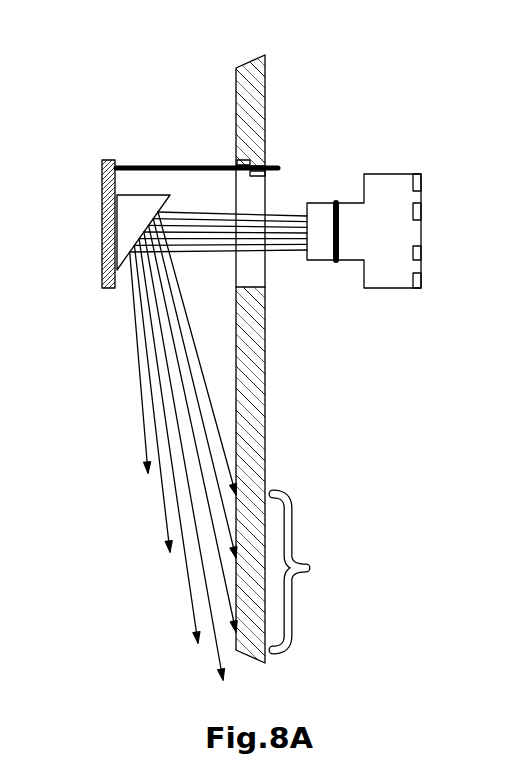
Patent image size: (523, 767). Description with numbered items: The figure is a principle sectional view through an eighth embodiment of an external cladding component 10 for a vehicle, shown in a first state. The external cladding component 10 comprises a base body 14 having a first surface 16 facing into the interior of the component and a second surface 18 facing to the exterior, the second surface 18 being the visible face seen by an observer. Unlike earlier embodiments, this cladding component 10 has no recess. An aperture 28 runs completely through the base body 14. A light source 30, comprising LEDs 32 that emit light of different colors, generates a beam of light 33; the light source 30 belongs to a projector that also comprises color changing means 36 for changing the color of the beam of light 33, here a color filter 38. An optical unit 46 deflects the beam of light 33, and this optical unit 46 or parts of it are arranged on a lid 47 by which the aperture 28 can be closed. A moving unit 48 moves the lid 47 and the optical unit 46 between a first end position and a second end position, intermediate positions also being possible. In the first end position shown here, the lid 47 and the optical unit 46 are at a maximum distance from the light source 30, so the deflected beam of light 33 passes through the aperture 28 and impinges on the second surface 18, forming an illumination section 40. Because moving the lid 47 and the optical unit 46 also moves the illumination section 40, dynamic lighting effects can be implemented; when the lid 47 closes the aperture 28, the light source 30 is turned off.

The external cladding component 10 is at (115, 72).
The base body 14 is at (256, 357).
The first surface 16 is at (256, 357).
The second surface 18 is at (236, 72).
The aperture 28 is at (257, 273).
The light source 30 is at (381, 162).
The LEDs 32 is at (381, 162).
The beam of light 33 is at (135, 500).
The color changing means 36 is at (346, 162).
The color filter 38 is at (333, 222).
The illumination section 40 is at (312, 572).
The optical unit 46 is at (140, 210).
The lid 47 is at (100, 188).
The moving unit 48 is at (197, 165).